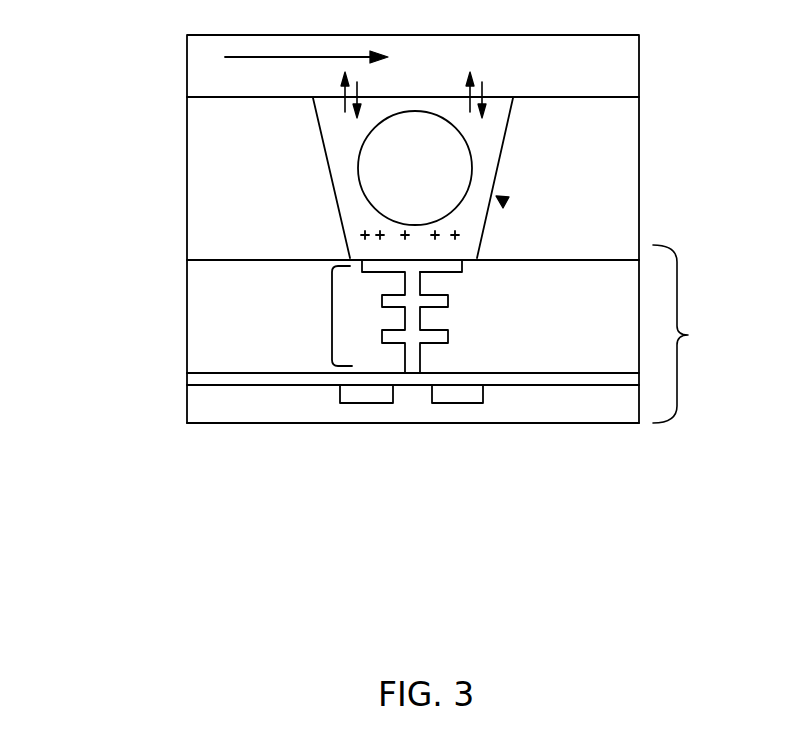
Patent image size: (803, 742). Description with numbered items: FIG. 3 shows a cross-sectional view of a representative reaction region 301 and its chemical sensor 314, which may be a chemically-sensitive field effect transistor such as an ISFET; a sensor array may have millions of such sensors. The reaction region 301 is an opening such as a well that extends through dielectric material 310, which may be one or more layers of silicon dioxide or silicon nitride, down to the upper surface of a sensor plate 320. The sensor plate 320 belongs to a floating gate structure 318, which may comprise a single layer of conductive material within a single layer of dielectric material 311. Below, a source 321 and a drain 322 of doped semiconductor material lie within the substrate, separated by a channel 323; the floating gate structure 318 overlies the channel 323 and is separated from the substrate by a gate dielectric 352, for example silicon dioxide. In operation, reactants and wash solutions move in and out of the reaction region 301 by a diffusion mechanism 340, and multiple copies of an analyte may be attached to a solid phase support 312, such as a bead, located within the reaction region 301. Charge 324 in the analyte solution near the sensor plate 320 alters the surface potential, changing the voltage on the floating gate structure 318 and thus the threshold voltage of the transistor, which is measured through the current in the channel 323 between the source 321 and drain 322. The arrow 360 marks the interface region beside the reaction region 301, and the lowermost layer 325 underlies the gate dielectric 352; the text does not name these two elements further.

The dielectric material 310 is at (697, 164).
The diffusion mechanism 340 is at (678, 85).
The solid phase support 312 is at (359, 167).
The reaction region 301 is at (668, 134).
The interface boundary 360 is at (563, 234).
The charge 324 is at (362, 242).
The dielectric material 311 is at (205, 320).
The floating gate structure 318 is at (332, 316).
The drain 322 is at (282, 449).
The source 321 is at (527, 452).
The sensor plate 320 is at (522, 318).
The chemical sensor 314 is at (710, 334).
The gate dielectric 352 is at (187, 377).
The bottom layer 325 is at (188, 412).
The channel 323 is at (503, 498).